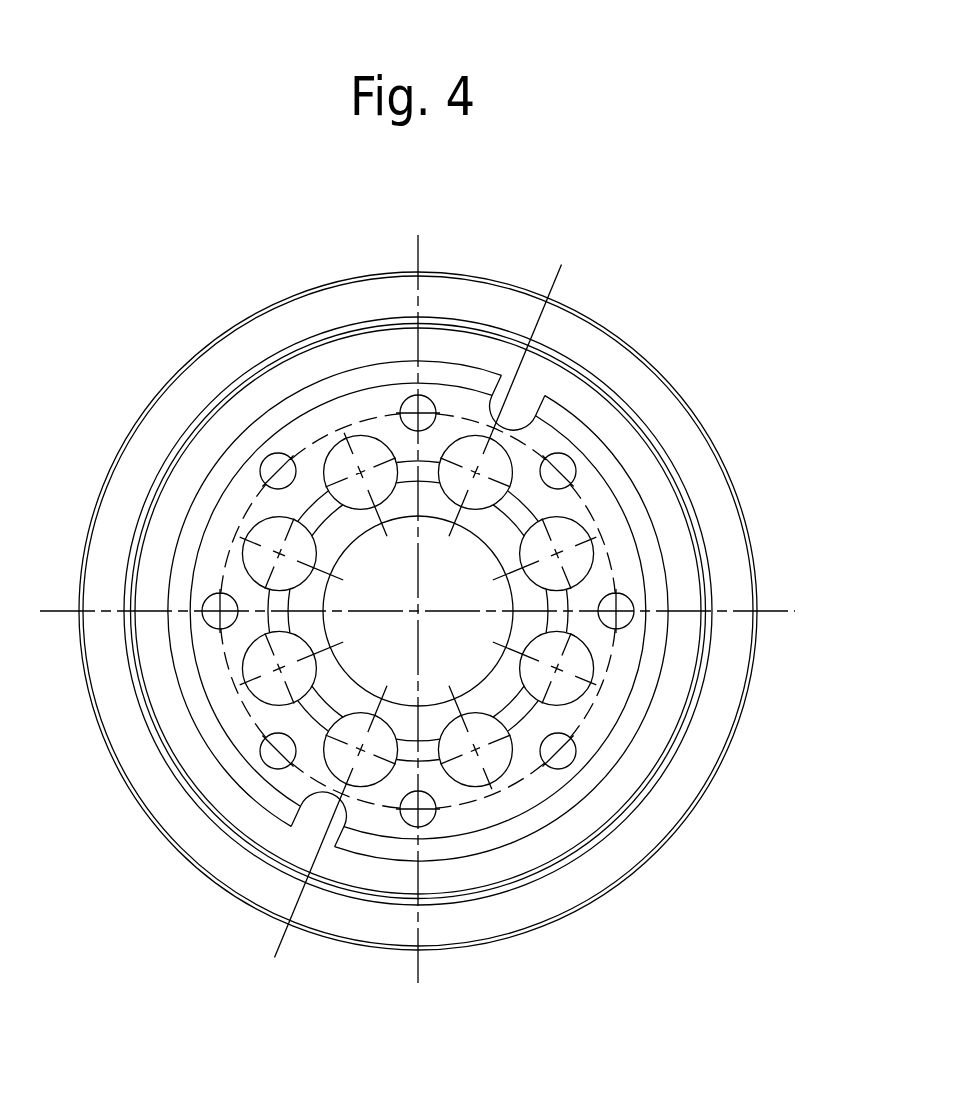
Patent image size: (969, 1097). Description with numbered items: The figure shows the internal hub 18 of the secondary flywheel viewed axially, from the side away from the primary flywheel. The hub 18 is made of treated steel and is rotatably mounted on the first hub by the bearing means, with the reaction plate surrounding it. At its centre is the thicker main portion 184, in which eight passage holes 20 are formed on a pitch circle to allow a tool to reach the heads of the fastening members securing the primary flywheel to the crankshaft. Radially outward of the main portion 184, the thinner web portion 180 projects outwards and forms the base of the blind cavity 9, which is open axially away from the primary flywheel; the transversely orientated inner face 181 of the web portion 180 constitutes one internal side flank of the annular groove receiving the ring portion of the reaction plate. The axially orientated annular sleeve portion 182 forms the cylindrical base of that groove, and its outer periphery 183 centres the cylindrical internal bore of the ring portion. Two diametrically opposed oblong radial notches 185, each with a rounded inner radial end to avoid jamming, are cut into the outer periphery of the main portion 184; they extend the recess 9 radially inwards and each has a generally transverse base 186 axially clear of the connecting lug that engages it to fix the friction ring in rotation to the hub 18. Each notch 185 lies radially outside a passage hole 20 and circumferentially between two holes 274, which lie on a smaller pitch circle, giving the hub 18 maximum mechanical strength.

The internal hub 18 is at (238, 316).
The cavity 9 is at (188, 464).
The passage holes 20 is at (578, 556).
The hole 274 is at (626, 616).
The web portion 180 is at (327, 942).
The inner face 181 is at (475, 930).
The sleeve portion 182 is at (548, 873).
The outer periphery 183 is at (672, 767).
The main portion 184 is at (293, 786).
The radial notch 185 is at (499, 427).
The transverse base 186 is at (545, 345).